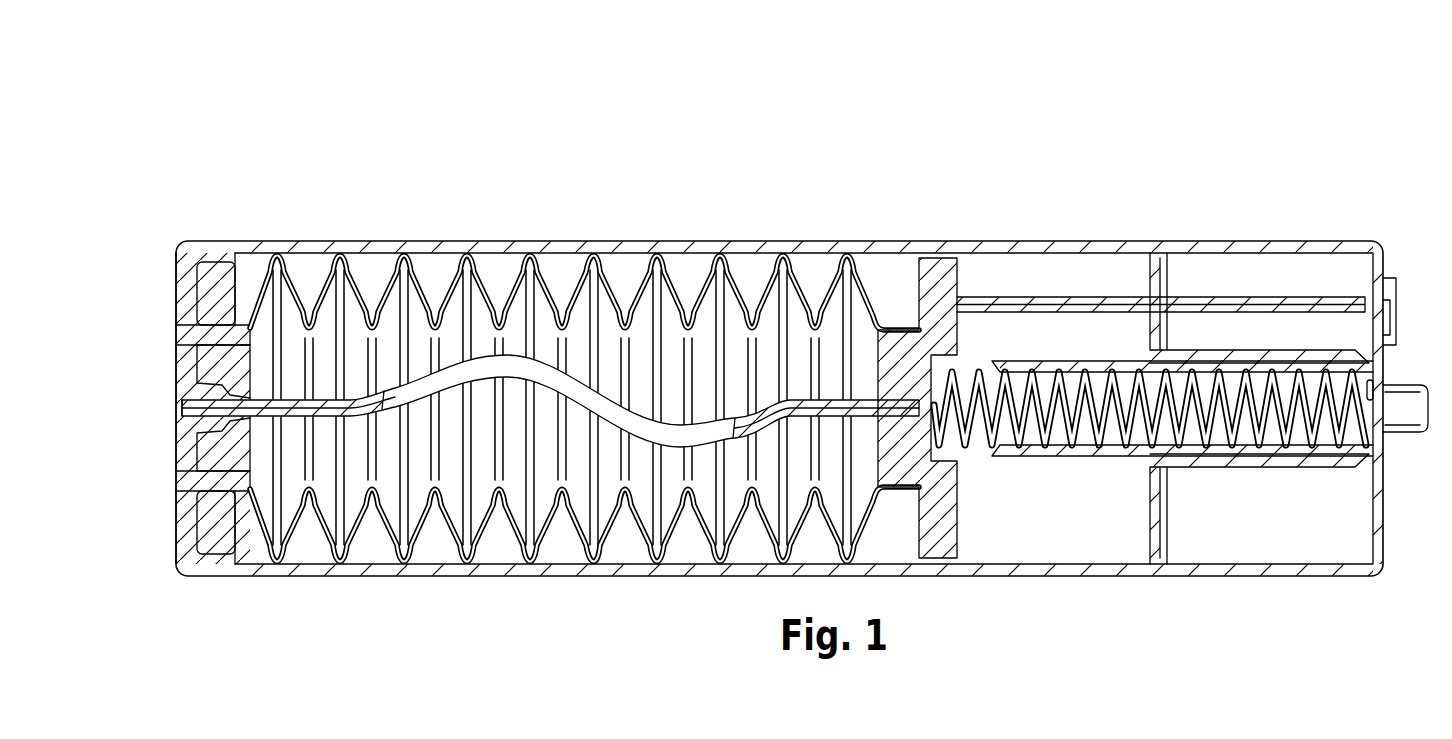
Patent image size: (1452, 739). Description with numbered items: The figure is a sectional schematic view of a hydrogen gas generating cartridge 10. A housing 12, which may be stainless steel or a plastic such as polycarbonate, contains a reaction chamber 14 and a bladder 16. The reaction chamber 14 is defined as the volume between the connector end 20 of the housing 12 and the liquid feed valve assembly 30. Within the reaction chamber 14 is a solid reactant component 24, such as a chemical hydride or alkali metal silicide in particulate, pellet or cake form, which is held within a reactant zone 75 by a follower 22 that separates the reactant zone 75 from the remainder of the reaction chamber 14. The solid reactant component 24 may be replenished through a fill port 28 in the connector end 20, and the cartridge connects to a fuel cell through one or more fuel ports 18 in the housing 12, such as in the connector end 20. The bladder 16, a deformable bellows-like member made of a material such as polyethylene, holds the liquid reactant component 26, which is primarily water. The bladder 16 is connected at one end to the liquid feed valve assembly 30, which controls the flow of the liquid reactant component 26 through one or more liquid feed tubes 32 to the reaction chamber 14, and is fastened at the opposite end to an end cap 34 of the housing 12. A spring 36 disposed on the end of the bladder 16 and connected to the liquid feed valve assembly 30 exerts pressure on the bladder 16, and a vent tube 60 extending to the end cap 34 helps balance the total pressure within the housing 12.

The hydrogen gas generating cartridge 10 is at (1258, 153).
The housing 12 is at (1063, 565).
The reaction chamber 14 is at (1088, 525).
The bladder 16 is at (479, 302).
The fuel port 18 is at (1405, 410).
The connector end 20 is at (1378, 505).
The follower 22 is at (1157, 538).
The solid reactant component 24 is at (1291, 275).
The liquid reactant component 26 is at (705, 350).
The fill port 28 is at (1382, 304).
The liquid feed valve assembly 30 is at (931, 268).
The liquid feed tube 32 is at (1222, 292).
The end cap 34 is at (170, 268).
The spring 36 is at (1207, 434).
The vent tube 60 is at (425, 385).
The reactant zone 75 is at (1278, 508).